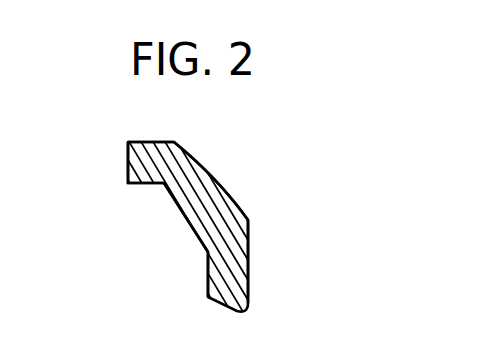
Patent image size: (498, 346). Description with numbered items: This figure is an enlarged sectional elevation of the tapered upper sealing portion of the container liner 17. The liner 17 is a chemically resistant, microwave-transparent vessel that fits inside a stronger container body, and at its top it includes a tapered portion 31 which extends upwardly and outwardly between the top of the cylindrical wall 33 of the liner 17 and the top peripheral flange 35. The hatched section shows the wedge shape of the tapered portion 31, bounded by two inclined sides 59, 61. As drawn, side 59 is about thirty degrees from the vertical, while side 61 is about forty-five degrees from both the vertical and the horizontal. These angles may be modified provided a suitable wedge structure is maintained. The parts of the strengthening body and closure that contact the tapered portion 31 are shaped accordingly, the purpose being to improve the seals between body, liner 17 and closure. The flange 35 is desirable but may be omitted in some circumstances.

The tapered portion 31 is at (216, 169).
The flange 35 is at (144, 144).
The side 61 is at (230, 200).
The side 59 is at (187, 221).
The cylindrical wall 33 is at (207, 257).
The liner 17 is at (249, 292).